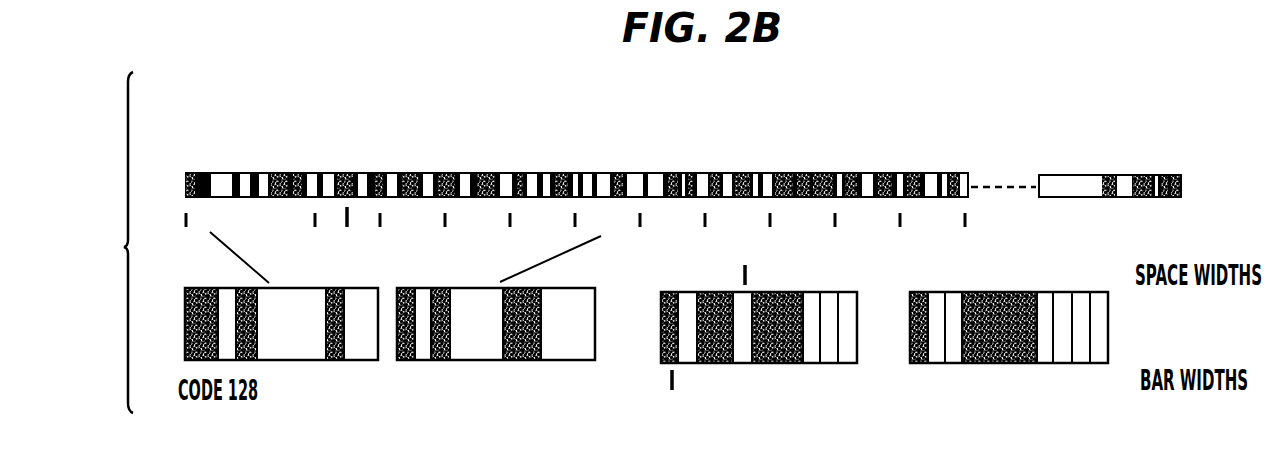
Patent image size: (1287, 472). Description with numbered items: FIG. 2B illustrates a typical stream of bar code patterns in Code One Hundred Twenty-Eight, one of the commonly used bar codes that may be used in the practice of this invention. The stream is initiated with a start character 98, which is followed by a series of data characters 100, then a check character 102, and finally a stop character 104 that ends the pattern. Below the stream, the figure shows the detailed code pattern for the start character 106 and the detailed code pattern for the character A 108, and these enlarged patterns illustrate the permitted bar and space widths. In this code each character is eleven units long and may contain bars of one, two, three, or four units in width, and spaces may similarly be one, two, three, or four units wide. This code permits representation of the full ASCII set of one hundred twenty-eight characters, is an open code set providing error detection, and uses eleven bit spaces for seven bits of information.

The start character 98 is at (577, 156).
The data characters 100 is at (935, 165).
The check character 102 is at (1070, 133).
The stop character 104 is at (1142, 133).
The detailed code pattern for the start character 106 is at (657, 338).
The detailed code pattern for the character A 108 is at (1112, 337).